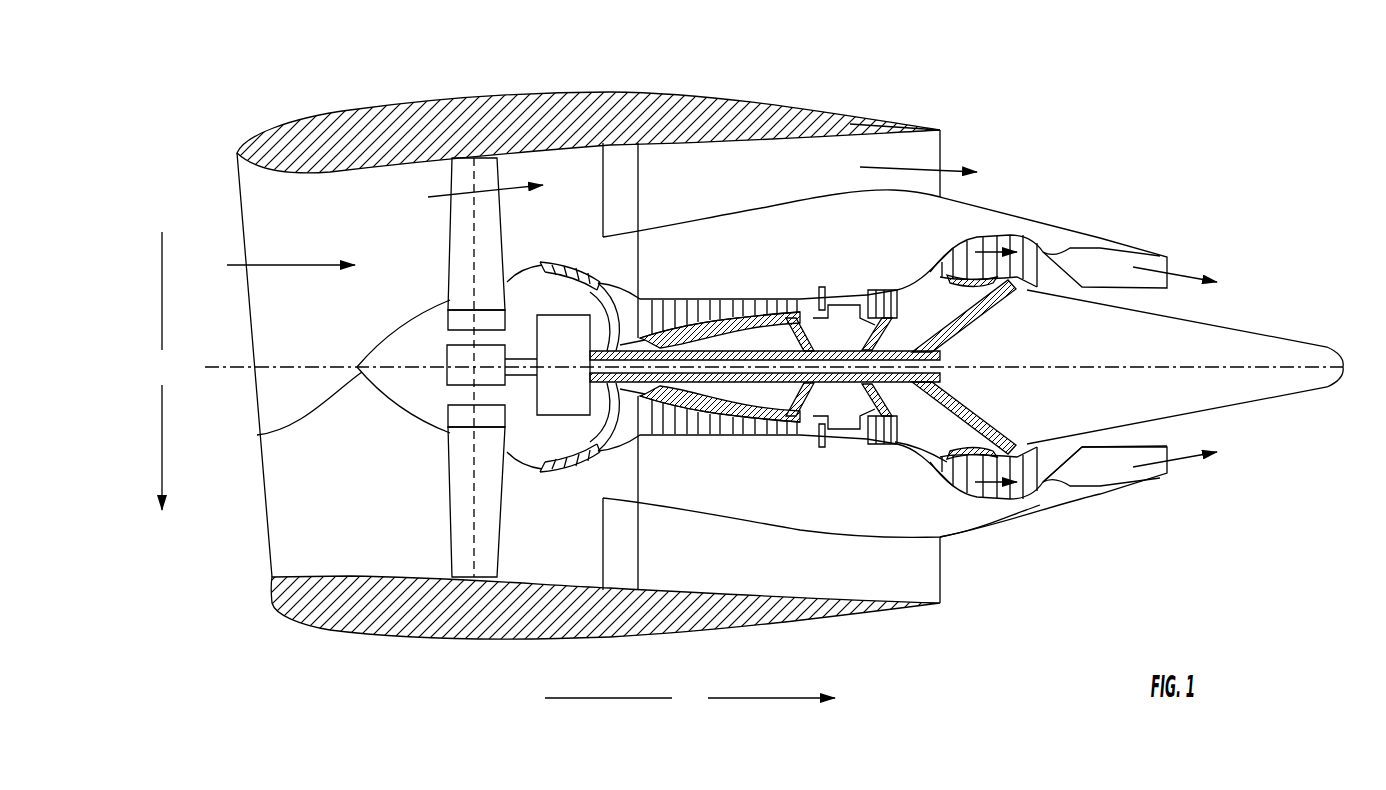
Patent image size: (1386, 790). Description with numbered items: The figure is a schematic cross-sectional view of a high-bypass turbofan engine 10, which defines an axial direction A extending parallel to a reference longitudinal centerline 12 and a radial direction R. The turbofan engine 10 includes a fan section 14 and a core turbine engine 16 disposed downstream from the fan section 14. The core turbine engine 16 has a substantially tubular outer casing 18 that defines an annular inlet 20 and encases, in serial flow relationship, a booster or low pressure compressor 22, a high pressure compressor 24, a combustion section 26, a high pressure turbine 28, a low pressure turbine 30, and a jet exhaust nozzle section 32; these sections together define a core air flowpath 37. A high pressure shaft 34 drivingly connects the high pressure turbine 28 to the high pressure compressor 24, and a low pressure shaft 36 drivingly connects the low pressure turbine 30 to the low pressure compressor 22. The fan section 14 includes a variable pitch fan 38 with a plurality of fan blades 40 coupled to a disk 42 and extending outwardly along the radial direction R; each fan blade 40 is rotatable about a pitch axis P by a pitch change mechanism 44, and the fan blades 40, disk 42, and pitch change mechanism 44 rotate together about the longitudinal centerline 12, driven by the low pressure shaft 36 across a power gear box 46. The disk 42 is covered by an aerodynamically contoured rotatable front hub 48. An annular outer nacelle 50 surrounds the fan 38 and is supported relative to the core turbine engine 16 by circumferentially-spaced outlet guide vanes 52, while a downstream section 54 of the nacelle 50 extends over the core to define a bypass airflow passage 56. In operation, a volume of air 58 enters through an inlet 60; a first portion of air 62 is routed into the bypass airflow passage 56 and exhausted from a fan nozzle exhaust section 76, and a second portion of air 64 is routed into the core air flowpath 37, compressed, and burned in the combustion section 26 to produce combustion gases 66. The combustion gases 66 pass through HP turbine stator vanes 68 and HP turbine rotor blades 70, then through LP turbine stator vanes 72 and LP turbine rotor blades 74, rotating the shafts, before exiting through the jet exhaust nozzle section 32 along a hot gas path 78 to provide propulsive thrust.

The turbofan engine 10 is at (1083, 108).
The longitudinal centerline 12 is at (1107, 365).
The fan section 14 is at (407, 180).
The core turbine engine 16 is at (758, 247).
The outer casing 18 is at (797, 532).
The annular inlet 20 is at (547, 470).
The low pressure compressor 22 is at (608, 418).
The high pressure compressor 24 is at (667, 423).
The combustion section 26 is at (840, 430).
The high pressure turbine 28 is at (987, 423).
The low pressure turbine 30 is at (1020, 505).
The jet exhaust nozzle section 32 is at (1087, 482).
The high pressure shaft 34 is at (840, 340).
The low pressure shaft 36 is at (980, 327).
The core air flowpath 37 is at (630, 430).
The variable pitch fan 38 is at (417, 418).
The fan blades 40 is at (445, 515).
The disk 42 is at (465, 320).
The pitch change mechanism 44 is at (447, 348).
The power gear box 46 is at (627, 302).
The front hub 48 is at (257, 435).
The outer nacelle 50 is at (495, 640).
The outlet guide vanes 52 is at (638, 173).
The downstream section of the nacelle 54 is at (883, 117).
The bypass airflow passage 56 is at (788, 186).
The volume of air 58 is at (287, 265).
The inlet 60 is at (268, 578).
The first portion of air 62 is at (903, 167).
The second portion of air 64 is at (523, 260).
The combustion gases 66 is at (883, 287).
The HP turbine stator vanes 68 is at (857, 440).
The HP turbine rotor blades 70 is at (947, 403).
The LP turbine stator vanes 72 is at (933, 490).
The LP turbine rotor blades 74 is at (960, 490).
The fan nozzle exhaust section 76 is at (930, 153).
The hot gas path 78 is at (923, 267).
The pitch axis P is at (478, 173).
The radial direction R is at (162, 371).
The axial direction A is at (690, 698).